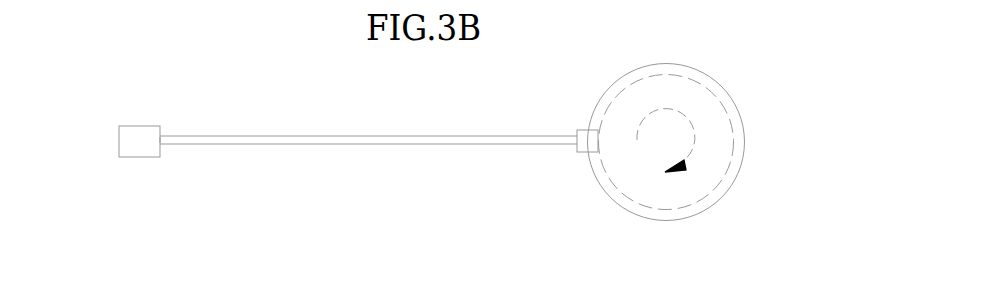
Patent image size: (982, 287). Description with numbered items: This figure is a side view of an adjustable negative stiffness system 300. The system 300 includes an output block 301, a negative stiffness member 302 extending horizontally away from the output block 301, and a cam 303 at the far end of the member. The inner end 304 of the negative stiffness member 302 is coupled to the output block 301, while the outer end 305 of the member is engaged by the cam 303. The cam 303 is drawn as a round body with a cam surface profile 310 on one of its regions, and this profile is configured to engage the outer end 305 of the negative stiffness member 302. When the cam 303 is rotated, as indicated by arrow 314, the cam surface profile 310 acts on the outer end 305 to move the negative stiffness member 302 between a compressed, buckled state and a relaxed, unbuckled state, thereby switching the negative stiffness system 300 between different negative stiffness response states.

The negative stiffness system 300 is at (835, 55).
The output block 301 is at (133, 141).
The negative stiffness member 302 is at (321, 137).
The cam 303 is at (727, 62).
The inner end 304 is at (160, 141).
The outer end 305 is at (585, 140).
The cam surface profile 310 is at (733, 145).
The rotation arrow 314 is at (690, 123).